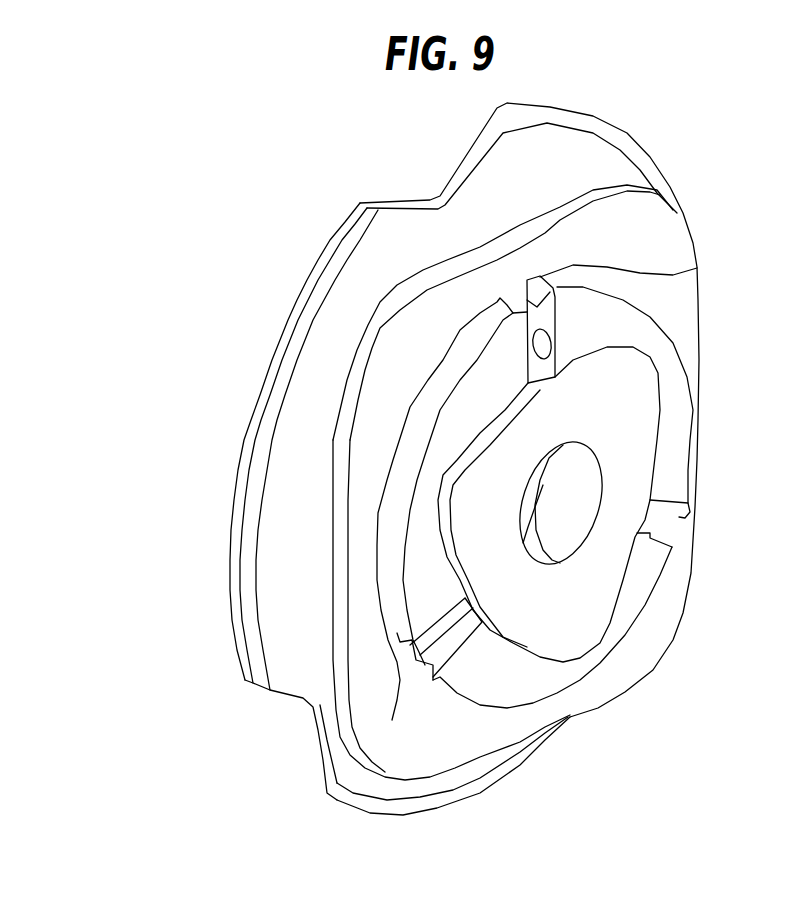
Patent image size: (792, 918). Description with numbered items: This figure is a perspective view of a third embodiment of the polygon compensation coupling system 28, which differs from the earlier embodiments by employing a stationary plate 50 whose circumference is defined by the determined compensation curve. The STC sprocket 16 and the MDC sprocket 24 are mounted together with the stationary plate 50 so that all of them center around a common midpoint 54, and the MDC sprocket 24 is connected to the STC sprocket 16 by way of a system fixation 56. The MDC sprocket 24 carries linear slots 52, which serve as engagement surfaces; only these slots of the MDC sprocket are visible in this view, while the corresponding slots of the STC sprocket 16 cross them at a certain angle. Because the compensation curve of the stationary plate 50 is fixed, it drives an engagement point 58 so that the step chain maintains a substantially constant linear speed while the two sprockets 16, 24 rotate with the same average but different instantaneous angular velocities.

The polygon compensation coupling system 28 is at (251, 187).
The STC sprocket 16 is at (610, 133).
The MDC sprocket 24 is at (463, 403).
The system fixation 56 is at (335, 481).
The stationary plate 50 is at (627, 415).
The linear slots 52 is at (697, 268).
The common midpoint 54 is at (553, 562).
The engagement point 58 is at (551, 344).